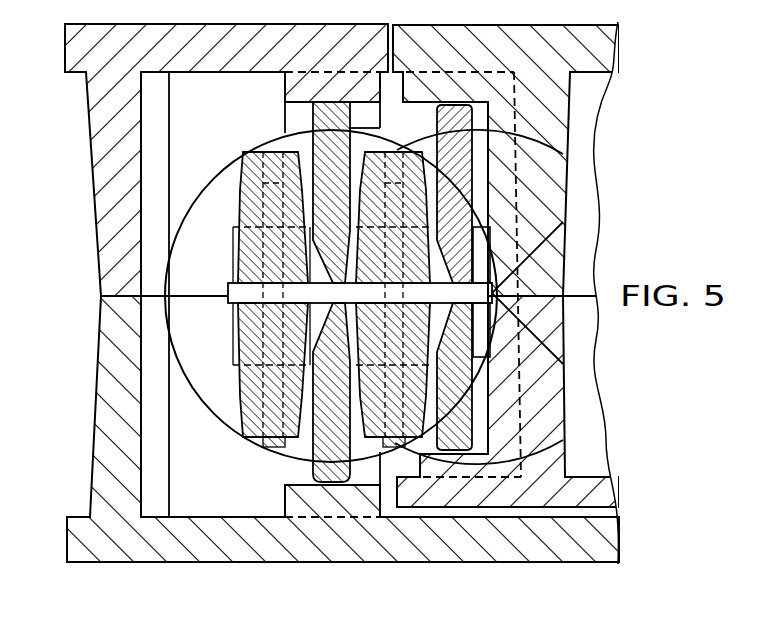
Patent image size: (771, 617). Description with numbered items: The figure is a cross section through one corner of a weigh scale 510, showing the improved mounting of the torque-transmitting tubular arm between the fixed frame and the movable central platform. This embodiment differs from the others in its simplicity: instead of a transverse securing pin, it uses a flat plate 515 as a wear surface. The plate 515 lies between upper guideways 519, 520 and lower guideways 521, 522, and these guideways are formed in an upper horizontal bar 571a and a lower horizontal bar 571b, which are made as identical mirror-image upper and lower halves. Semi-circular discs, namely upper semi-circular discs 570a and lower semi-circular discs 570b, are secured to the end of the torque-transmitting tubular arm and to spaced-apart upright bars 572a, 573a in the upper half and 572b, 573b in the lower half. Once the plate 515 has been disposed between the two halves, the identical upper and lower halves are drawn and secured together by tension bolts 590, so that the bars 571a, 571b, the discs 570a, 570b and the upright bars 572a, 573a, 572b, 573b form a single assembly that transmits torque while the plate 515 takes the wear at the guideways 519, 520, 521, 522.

The weigh scale 510 is at (432, 22).
The flat plate 515 is at (494, 304).
The upper guideway 519 is at (322, 268).
The lower guideway 521 is at (317, 316).
The upper guideway 520 is at (478, 257).
The lower guideway 522 is at (480, 334).
The upper semi-circular discs 570a is at (188, 251).
The lower semi-circular discs 570b is at (185, 339).
The upper horizontal bar 571a is at (233, 228).
The lower horizontal bar 571b is at (233, 365).
The upright bar 572a is at (472, 192).
The upright bar 572b is at (565, 422).
The upright bar 573a is at (250, 162).
The upright bar 573b is at (247, 396).
The tension bolts 590 is at (283, 152).